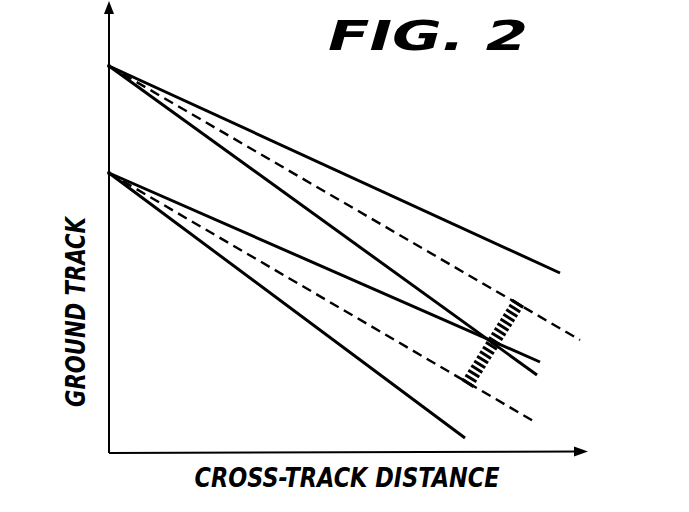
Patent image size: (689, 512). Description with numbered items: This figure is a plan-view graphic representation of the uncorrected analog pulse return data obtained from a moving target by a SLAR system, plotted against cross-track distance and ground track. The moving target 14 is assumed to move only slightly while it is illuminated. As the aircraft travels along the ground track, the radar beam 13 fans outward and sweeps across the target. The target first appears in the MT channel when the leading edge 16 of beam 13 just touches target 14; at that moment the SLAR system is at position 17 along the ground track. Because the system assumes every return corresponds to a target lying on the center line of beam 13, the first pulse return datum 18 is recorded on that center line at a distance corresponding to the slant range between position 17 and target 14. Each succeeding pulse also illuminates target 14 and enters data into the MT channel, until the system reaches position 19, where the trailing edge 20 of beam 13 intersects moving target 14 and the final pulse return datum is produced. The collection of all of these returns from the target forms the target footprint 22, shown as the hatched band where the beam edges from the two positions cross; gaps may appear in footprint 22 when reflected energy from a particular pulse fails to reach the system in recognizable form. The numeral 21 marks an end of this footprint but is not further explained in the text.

The beam 13 is at (272, 127).
The moving target 14 is at (498, 342).
The leading edge 16 is at (305, 255).
The position 17 is at (108, 173).
The first pulse return datum 18 is at (472, 383).
The position 19 is at (108, 66).
The trailing edge 20 is at (225, 150).
The upper end of hatched overlap region 21 is at (520, 303).
The target footprint 22 is at (484, 310).